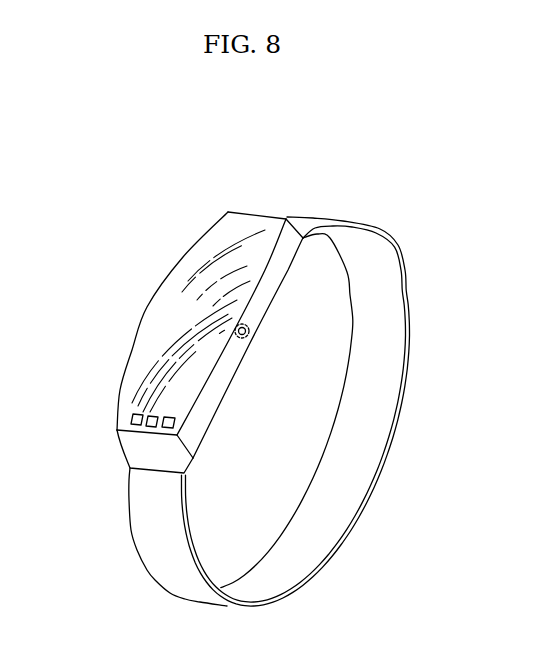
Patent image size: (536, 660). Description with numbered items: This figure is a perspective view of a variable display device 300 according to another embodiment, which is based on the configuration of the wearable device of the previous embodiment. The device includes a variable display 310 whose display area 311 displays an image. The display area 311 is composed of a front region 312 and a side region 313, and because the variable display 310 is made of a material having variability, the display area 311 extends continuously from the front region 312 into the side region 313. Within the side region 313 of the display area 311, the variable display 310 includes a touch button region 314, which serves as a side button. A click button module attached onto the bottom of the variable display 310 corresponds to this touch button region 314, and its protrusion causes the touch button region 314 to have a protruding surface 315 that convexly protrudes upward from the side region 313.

The variable display device 300 is at (280, 145).
The variable display 310 is at (110, 328).
The display area 311 is at (131, 197).
The front region 312 is at (170, 290).
The side region 313 is at (257, 298).
The touch button region 314 is at (251, 328).
The protruding surface 315 is at (243, 340).